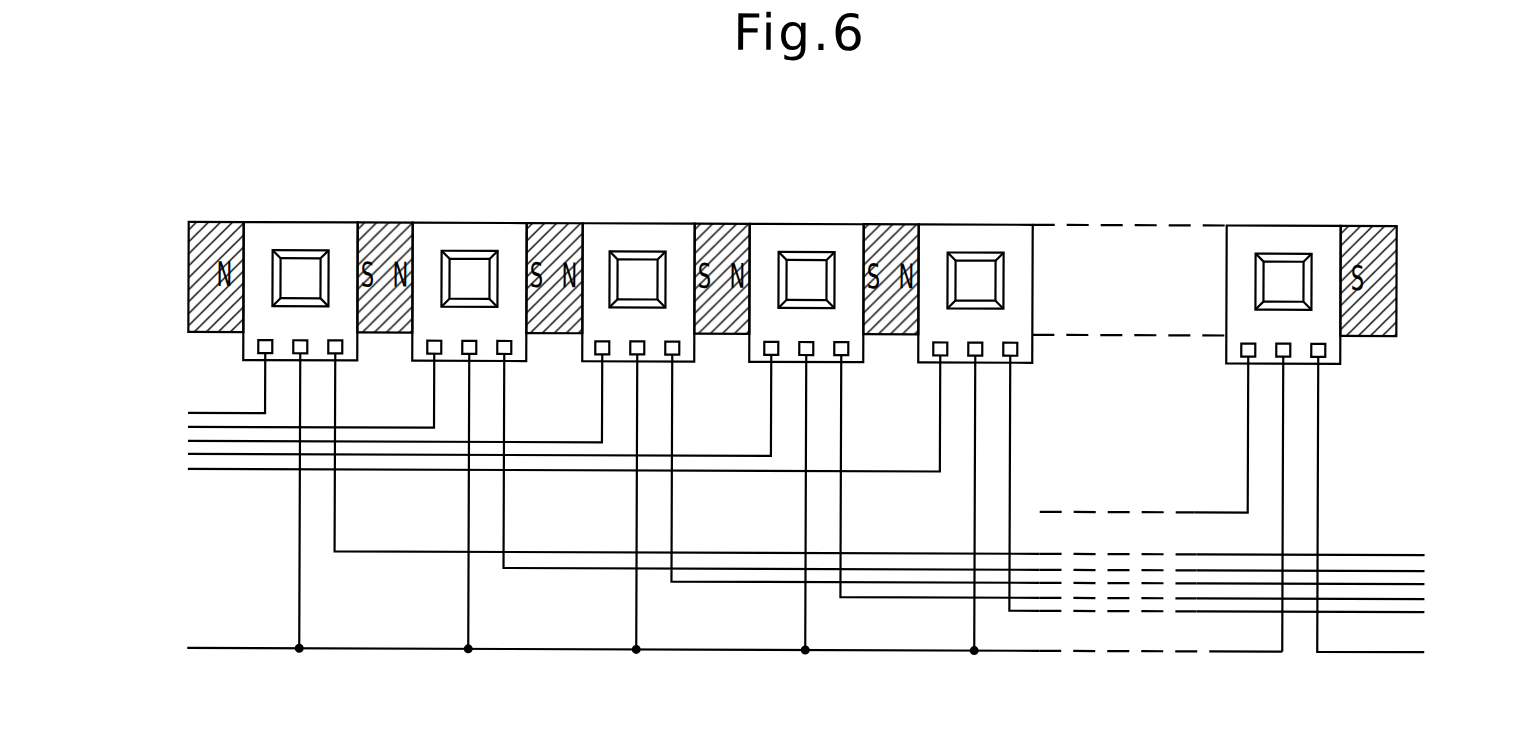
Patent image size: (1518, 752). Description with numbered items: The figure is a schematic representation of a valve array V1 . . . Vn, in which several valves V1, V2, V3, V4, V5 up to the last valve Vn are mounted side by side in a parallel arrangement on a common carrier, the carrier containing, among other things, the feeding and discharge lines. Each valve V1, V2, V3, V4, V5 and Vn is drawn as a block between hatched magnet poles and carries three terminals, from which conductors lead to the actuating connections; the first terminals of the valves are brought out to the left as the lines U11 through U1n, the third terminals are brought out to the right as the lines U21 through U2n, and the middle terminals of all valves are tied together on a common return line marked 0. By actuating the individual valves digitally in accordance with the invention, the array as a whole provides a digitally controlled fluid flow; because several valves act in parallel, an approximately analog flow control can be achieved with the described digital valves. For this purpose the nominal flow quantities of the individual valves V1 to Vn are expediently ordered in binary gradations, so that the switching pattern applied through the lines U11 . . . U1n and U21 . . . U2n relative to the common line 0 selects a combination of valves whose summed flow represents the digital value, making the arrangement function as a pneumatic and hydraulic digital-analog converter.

The valve V1 is at (300, 265).
The valve V2 is at (469, 266).
The valve V3 is at (638, 267).
The valve V4 is at (806, 267).
The valve V5 is at (975, 268).
The valve Vn is at (1283, 269).
The first sensor output voltage line U11 is at (198, 394).
The n-th sensor first output voltage line U1n is at (523, 420).
The first sensor second output voltage line U21 is at (908, 468).
The n-th sensor second output voltage line U2n is at (1247, 496).
The common ground line 0 is at (786, 510).